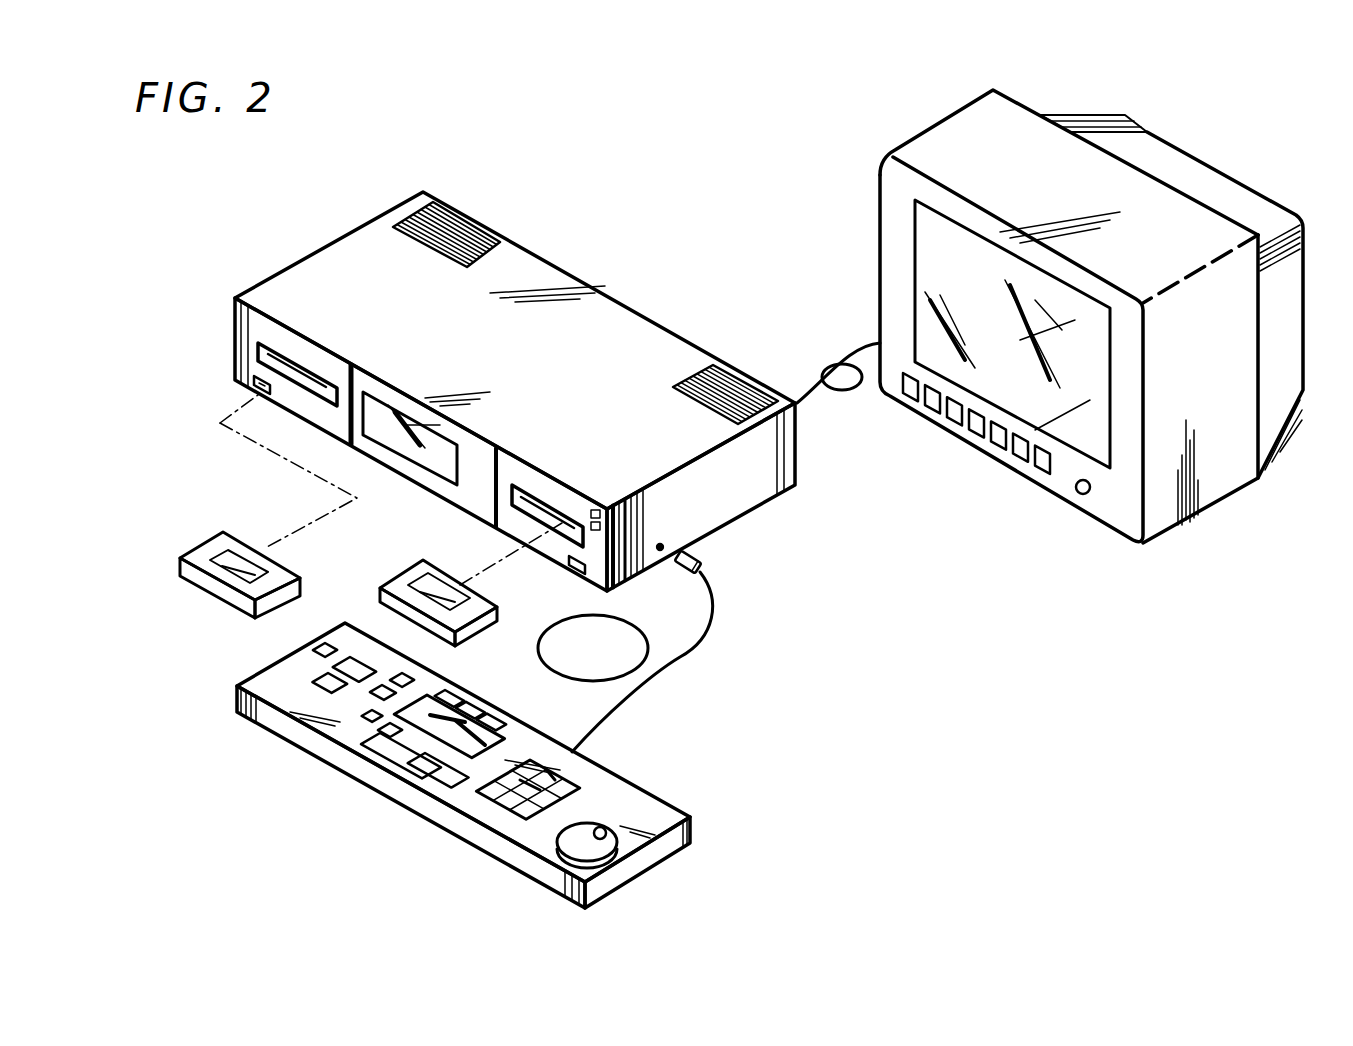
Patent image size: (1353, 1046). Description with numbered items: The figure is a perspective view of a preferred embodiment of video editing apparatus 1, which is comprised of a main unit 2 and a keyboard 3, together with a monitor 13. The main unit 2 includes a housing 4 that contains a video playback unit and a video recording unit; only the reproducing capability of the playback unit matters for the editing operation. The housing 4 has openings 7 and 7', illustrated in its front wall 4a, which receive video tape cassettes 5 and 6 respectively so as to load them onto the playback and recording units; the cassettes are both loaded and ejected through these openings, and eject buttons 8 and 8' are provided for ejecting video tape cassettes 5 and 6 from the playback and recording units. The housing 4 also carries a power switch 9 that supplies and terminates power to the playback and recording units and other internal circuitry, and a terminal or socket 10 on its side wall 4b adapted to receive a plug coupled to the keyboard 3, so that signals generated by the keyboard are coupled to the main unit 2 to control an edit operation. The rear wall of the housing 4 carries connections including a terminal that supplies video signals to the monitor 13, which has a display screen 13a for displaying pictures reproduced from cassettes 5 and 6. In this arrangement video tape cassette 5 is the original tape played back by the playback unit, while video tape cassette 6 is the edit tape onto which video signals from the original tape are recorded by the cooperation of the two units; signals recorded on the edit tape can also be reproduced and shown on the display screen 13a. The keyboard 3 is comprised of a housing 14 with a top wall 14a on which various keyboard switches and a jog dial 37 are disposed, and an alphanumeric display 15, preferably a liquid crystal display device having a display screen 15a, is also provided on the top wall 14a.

The apparatus 1 is at (828, 672).
The main unit 2 is at (723, 527).
The keyboard 3 is at (690, 800).
The housing 4 is at (580, 272).
The front wall 4a is at (238, 312).
The side wall 4b is at (778, 483).
The video tape cassette 5 is at (200, 580).
The video tape cassette 6 is at (420, 560).
The opening 7 is at (309, 347).
The opening 7' is at (547, 485).
The eject button 8 is at (207, 391).
The eject button 8' is at (551, 585).
The power switch 9 is at (615, 560).
The socket 10 is at (662, 545).
The monitor 13 is at (1204, 510).
The display screen 13a is at (930, 242).
The housing 14 is at (655, 870).
The top wall 14a is at (578, 753).
The alphanumeric display 15 is at (410, 753).
The display screen 15a is at (504, 728).
The jog dial 37 is at (555, 848).